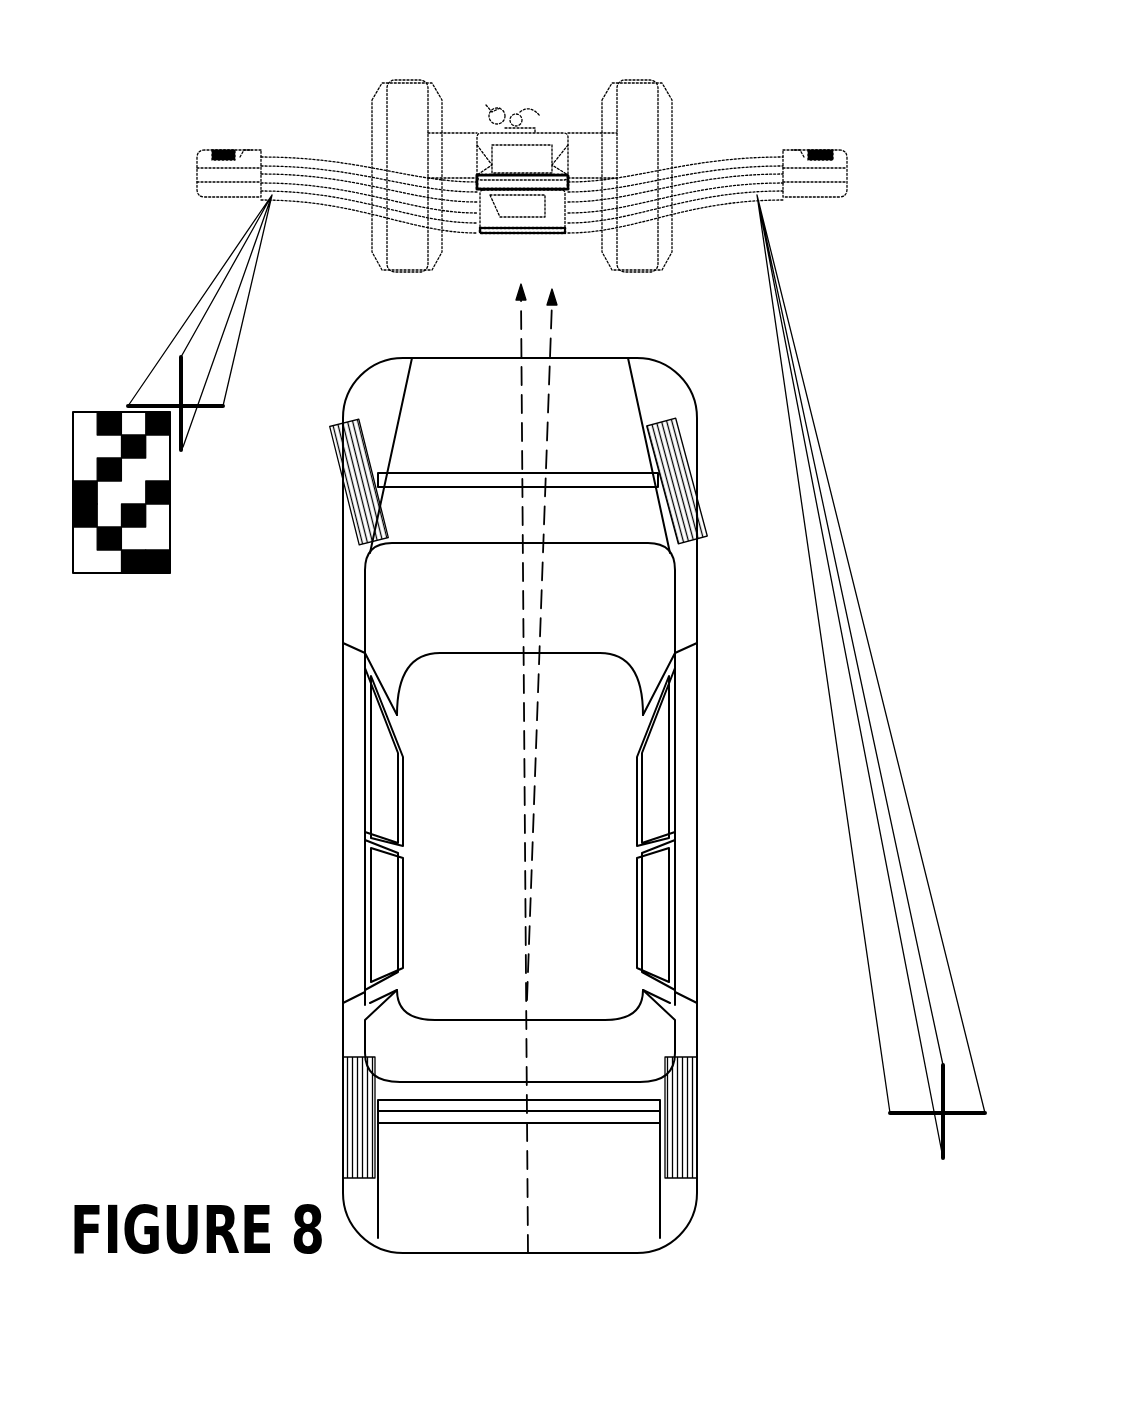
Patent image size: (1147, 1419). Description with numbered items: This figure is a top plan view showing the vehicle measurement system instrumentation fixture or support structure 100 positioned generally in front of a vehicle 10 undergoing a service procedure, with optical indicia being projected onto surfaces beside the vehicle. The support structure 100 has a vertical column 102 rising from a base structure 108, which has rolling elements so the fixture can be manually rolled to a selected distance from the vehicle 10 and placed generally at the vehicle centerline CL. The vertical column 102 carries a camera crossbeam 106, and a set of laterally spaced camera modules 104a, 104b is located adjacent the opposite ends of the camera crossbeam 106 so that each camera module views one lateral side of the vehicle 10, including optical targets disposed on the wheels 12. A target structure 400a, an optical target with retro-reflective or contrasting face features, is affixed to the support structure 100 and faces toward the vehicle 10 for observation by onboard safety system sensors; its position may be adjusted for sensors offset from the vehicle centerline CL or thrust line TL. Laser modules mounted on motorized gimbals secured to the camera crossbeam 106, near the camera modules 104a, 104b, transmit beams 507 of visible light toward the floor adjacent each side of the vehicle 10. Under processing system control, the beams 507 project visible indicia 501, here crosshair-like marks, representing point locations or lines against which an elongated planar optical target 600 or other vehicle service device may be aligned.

The support structure 100 is at (305, 107).
The vertical column 102 is at (543, 130).
The camera module 104a is at (813, 167).
The camera module 104b is at (230, 168).
The camera crossbeam 106 is at (683, 175).
The base structure 108 is at (628, 138).
The target structure 400a is at (538, 235).
The beams 507 is at (183, 300).
The visible indicia 501 is at (175, 397).
The elongated planar optical target 600 is at (172, 578).
The vehicle 10 is at (722, 940).
The wheels 12 is at (320, 457).
The vehicle centerline CL is at (515, 688).
The thrust line TL is at (545, 728).